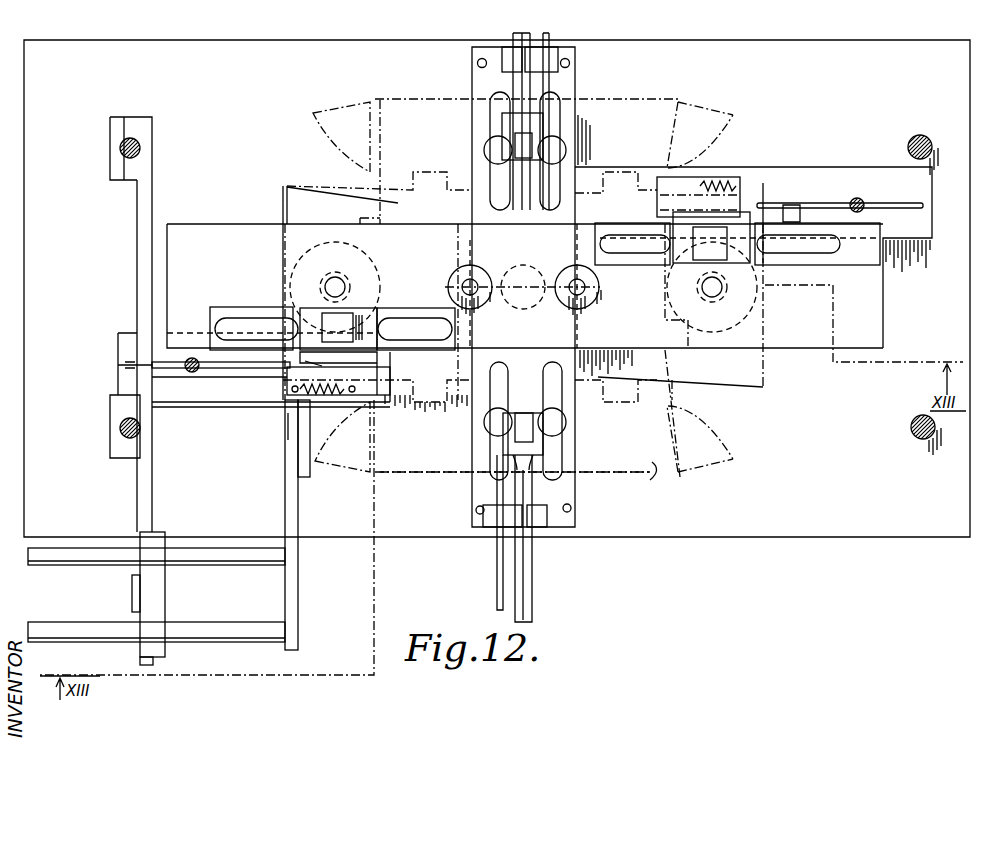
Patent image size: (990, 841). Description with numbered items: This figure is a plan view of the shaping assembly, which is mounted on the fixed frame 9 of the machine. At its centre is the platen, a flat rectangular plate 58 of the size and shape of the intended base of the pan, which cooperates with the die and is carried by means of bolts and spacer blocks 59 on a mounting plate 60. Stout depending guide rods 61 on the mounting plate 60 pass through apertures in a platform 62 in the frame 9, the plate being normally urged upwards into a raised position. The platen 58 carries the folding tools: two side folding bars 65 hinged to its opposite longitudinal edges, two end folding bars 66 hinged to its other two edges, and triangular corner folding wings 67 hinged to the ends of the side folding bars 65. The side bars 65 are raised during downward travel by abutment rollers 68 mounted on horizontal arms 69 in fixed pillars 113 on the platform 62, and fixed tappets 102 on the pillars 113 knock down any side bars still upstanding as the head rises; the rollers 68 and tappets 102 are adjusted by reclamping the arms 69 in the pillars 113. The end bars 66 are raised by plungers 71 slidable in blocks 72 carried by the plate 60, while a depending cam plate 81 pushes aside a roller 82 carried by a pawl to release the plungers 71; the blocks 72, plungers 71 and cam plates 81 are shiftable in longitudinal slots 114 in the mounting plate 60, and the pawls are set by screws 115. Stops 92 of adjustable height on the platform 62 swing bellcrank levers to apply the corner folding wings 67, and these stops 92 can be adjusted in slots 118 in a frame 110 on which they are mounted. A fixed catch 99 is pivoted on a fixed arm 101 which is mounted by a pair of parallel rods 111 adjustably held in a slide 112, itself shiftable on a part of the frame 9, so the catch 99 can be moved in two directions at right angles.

The fixed frame 9 is at (118, 148).
The flat rectangular plate 58 is at (398, 203).
The spacer blocks 59 is at (565, 300).
The mounting plate 60 is at (224, 240).
The guide rods 61 is at (340, 282).
The platform 62 is at (912, 190).
The side folding bars 65 is at (652, 473).
The end folding bars 66 is at (748, 379).
The corner folding wings 67 is at (698, 431).
The abutment rollers 68 is at (533, 148).
The horizontal arms 69 is at (520, 78).
The plungers 71 is at (330, 318).
The blocks 72 is at (713, 217).
The cam plate 81 is at (310, 363).
The roller 82 is at (677, 198).
The stops 92 is at (484, 152).
The fixed catch 99 is at (300, 410).
The fixed arm 101 is at (292, 598).
The fixed tappets 102 is at (572, 43).
The frame 110 is at (577, 133).
The parallel rods 111 is at (236, 553).
The slide 112 is at (152, 590).
The fixed pillars 113 is at (502, 60).
The longitudinal slots 114 is at (248, 318).
The screws 115 is at (193, 372).
The slots 118 is at (490, 118).